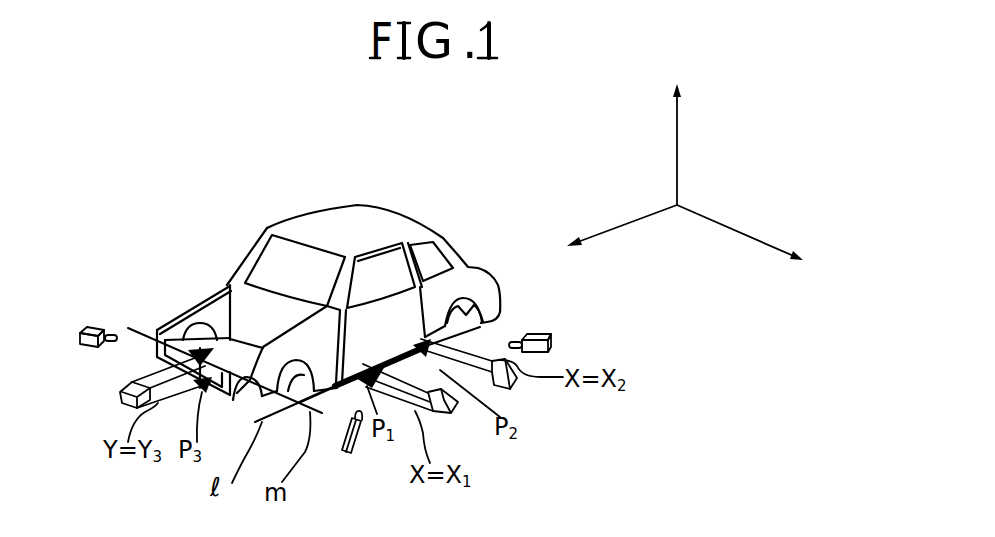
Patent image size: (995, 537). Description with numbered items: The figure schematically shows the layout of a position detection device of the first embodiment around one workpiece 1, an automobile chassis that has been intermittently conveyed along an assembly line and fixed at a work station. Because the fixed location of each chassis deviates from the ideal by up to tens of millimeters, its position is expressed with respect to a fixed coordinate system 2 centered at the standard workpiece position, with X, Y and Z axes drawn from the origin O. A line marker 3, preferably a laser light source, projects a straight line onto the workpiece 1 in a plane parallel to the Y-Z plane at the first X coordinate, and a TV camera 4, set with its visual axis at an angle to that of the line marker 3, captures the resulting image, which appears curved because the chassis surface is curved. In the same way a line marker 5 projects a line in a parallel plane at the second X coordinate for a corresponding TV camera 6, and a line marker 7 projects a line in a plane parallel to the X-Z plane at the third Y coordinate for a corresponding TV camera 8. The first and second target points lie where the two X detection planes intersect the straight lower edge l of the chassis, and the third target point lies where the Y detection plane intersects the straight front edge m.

The workpiece 1 is at (302, 216).
The fixed coordinate system 2 is at (626, 223).
The line marker 3 is at (455, 413).
The TV camera 4 is at (356, 458).
The line marker 5 is at (518, 388).
The TV camera 6 is at (550, 333).
The line marker 7 is at (121, 402).
The TV camera 8 is at (94, 325).